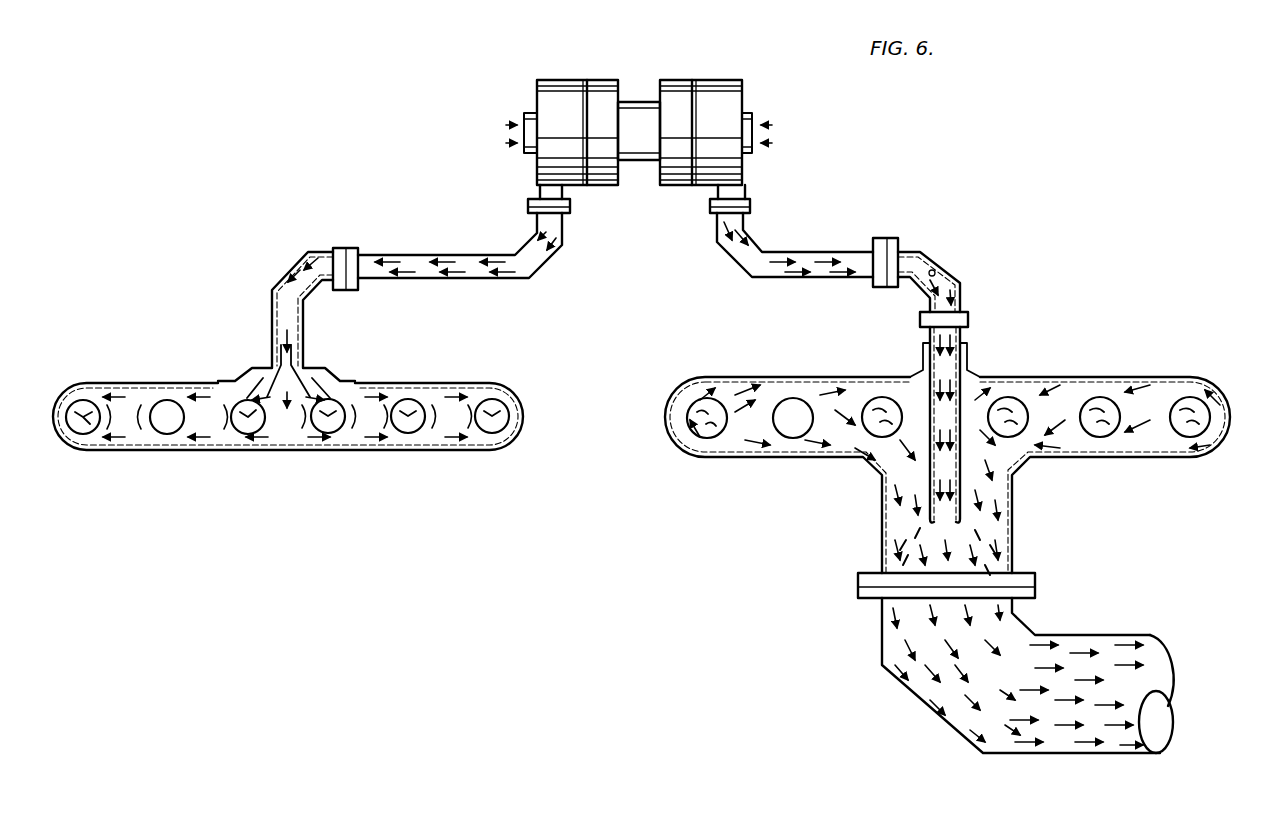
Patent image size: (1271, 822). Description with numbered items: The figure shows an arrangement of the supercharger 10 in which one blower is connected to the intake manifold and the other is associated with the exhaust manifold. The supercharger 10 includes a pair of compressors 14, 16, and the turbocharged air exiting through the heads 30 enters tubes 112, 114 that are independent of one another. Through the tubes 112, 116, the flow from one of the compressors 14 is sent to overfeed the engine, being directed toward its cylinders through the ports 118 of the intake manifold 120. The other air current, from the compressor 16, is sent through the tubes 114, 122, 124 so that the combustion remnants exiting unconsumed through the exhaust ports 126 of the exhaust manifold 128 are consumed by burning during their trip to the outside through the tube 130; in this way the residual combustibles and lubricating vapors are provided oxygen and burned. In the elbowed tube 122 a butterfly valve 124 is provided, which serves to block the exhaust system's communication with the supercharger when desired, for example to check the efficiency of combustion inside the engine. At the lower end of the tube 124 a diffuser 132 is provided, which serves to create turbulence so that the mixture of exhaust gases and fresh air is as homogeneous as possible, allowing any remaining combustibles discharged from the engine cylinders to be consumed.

The supercharger 10 is at (646, 76).
The compressor 14 is at (561, 85).
The compressor 16 is at (727, 82).
The head 30 is at (545, 191).
The tube 112 is at (421, 252).
The tube 114 is at (812, 250).
The tube 116 is at (270, 330).
The port 118 is at (170, 427).
The intake manifold 120 is at (286, 450).
The elbowed tube 122 is at (946, 268).
The tube 124 is at (968, 333).
The exhaust port 126 is at (700, 425).
The exhaust manifold 128 is at (763, 460).
The tube 130 is at (883, 640).
The diffuser 132 is at (968, 532).